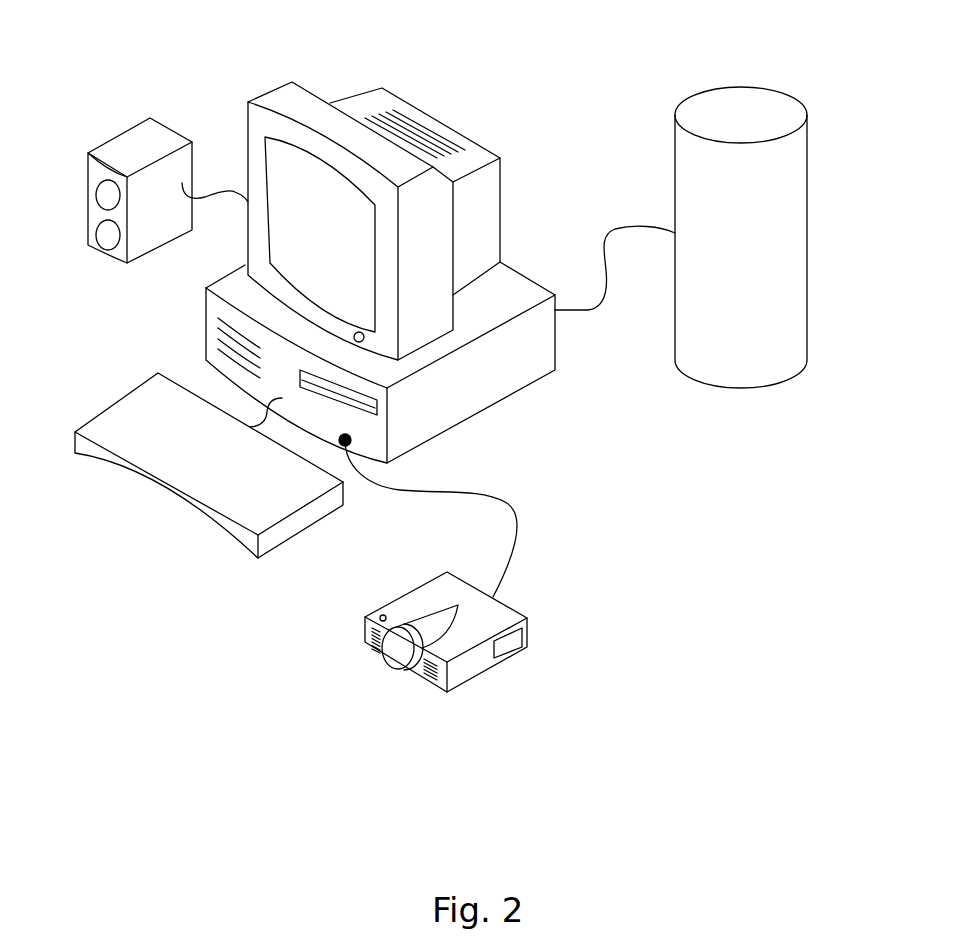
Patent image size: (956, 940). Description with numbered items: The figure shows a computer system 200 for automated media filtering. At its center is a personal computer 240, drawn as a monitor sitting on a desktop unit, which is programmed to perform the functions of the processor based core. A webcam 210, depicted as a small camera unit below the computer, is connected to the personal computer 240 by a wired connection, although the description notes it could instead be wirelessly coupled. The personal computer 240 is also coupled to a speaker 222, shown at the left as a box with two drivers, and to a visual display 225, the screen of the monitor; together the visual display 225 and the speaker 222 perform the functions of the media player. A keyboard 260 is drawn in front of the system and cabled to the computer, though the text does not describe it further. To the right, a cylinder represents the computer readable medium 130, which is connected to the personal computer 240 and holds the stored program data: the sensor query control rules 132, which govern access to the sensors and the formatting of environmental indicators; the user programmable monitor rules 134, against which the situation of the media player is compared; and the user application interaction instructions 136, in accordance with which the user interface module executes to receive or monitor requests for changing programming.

The computer system 200 is at (558, 96).
The speaker 222 is at (112, 140).
The visual display 225 is at (338, 243).
The personal computer 240 is at (475, 412).
The keyboard 260 is at (202, 530).
The webcam 210 is at (497, 667).
The computer readable medium 130 is at (743, 237).
The sensor query control rules 132 is at (743, 205).
The monitor rules 134 is at (743, 252).
The user application interaction instructions 136 is at (718, 288).